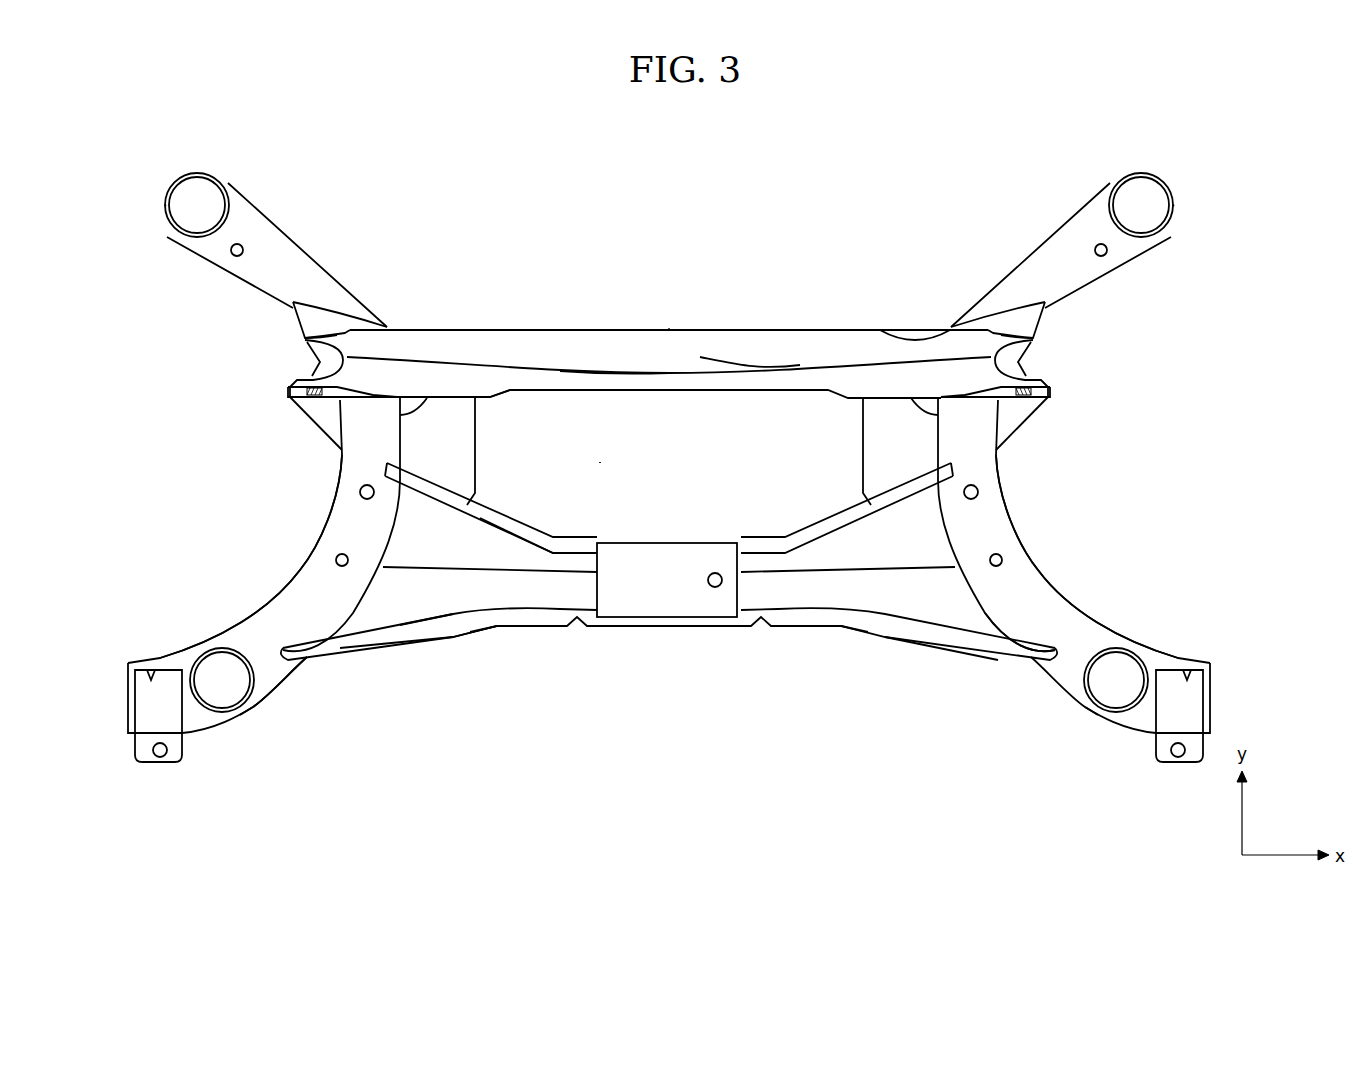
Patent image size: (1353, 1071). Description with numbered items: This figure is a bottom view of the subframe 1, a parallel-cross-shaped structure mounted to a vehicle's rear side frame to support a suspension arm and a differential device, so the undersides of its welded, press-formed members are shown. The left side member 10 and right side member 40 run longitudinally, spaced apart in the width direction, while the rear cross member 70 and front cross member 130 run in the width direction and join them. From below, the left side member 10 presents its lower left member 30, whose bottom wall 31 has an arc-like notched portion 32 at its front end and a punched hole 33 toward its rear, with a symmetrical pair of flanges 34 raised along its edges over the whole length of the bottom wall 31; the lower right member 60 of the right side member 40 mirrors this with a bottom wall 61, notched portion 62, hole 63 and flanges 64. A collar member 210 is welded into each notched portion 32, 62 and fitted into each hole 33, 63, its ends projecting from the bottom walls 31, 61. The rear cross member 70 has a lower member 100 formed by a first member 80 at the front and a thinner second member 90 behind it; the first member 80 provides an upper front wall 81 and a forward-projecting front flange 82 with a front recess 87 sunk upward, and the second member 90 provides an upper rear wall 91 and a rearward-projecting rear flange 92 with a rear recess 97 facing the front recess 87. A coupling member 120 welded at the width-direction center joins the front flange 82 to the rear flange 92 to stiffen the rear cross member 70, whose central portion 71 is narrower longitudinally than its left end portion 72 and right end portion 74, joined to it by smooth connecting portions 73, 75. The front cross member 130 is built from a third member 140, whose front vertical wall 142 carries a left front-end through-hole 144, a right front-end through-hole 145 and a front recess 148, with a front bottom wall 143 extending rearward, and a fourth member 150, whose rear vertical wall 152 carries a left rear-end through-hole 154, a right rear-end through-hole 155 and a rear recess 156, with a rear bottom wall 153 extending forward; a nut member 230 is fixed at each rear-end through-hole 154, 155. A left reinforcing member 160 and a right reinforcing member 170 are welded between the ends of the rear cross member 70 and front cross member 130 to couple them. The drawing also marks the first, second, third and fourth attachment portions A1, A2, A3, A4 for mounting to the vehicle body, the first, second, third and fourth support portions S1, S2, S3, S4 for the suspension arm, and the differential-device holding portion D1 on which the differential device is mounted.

The subframe 1 is at (913, 210).
The left side member 10 is at (1075, 482).
The lower left member 30 is at (1035, 533).
The bottom wall 31 is at (1027, 600).
The notched portion 32 is at (1147, 220).
The hole 33 is at (1137, 663).
The flanges 34 is at (1088, 617).
The right side member 40 is at (272, 487).
The lower right member 60 is at (315, 535).
The bottom wall 61 is at (265, 630).
The notched portion 62 is at (197, 225).
The hole 63 is at (208, 662).
The flanges 64 is at (287, 588).
The rear cross member 70 is at (722, 683).
The central portion 71 is at (648, 648).
The left end portion 72 is at (418, 668).
The connecting portion 73 is at (494, 648).
The right end portion 74 is at (968, 660).
The connecting portion 75 is at (855, 632).
The first member 80 is at (771, 530).
The upper front wall 81 is at (515, 545).
The front flange 82 is at (548, 522).
The front recess 87 is at (566, 515).
The second member 90 is at (800, 645).
The upper rear wall 91 is at (447, 600).
The rear flange 92 is at (475, 632).
The rear recess 97 is at (553, 628).
The lower member 100 is at (610, 662).
The coupling member 120 is at (688, 593).
The front cross member 130 is at (615, 283).
The third member 140 is at (712, 310).
The front vertical wall 142 is at (750, 329).
The front bottom wall 143 is at (640, 340).
The left front-end through-hole 144 is at (1015, 338).
The right front-end through-hole 145 is at (322, 335).
The front recess 148 is at (558, 322).
The fourth member 150 is at (713, 412).
The rear vertical wall 152 is at (665, 400).
The rear bottom wall 153 is at (627, 398).
The left rear-end through-hole 154 is at (1004, 405).
The right rear-end through-hole 155 is at (313, 413).
The rear recess 156 is at (572, 399).
The left reinforcing member 160 is at (873, 462).
The right reinforcing member 170 is at (460, 472).
The collar member 210 is at (175, 195).
The nut member 230 is at (300, 393).
The first attachment portion A1 is at (1200, 197).
The second attachment portion A2 is at (1075, 735).
The third attachment portion A3 is at (158, 202).
The fourth attachment portion A4 is at (263, 712).
The first support portion S1 is at (1065, 358).
The second support portion S2 is at (268, 358).
The third support portion S3 is at (797, 578).
The fourth support portion S4 is at (542, 580).
The differential-device holding portion D1 is at (606, 508).